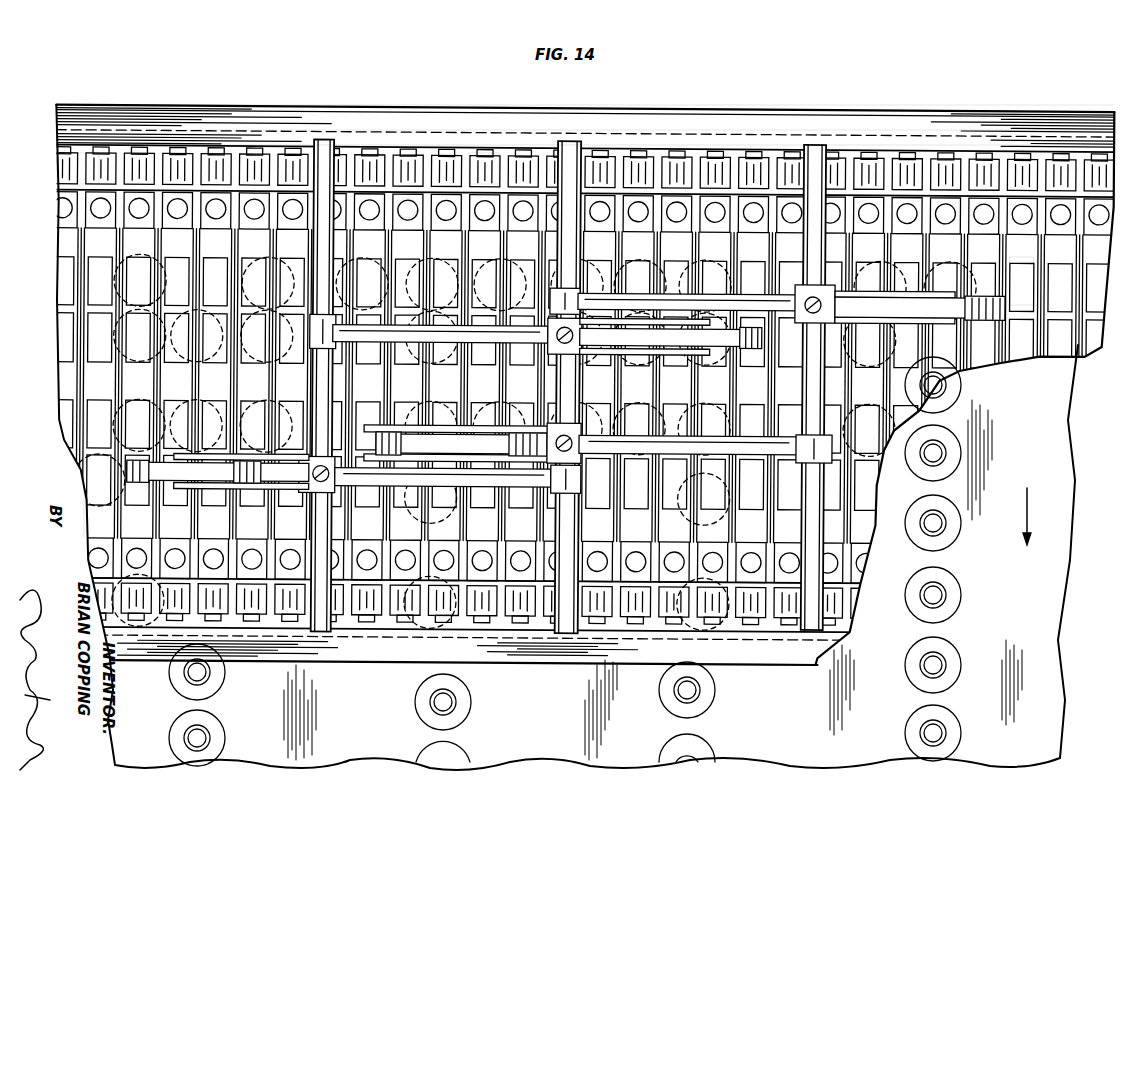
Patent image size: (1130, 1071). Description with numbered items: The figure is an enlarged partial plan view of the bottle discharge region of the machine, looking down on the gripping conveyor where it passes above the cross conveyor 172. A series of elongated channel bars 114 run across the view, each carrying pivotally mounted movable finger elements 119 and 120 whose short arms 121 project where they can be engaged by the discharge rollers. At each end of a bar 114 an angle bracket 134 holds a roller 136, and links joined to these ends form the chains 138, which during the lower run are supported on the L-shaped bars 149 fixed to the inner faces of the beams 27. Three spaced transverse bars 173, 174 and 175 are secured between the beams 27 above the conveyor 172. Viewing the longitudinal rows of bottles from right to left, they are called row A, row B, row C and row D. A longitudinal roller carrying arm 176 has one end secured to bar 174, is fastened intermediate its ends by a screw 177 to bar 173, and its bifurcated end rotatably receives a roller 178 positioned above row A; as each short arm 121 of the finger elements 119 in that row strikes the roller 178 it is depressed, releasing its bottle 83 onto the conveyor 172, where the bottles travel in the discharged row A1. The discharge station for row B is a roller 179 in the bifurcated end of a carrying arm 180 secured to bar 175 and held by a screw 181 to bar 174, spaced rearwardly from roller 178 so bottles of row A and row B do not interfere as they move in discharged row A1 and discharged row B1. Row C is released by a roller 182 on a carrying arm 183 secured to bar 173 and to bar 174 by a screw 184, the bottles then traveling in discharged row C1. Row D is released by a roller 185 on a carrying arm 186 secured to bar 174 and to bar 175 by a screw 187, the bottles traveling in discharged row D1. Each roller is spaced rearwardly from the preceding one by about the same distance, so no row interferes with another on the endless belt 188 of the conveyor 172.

The beams 27 is at (440, 98).
The bottles 83 is at (172, 740).
The channel bar 114 is at (95, 238).
The finger element 119 is at (140, 265).
The finger element 120 is at (148, 352).
The short arm 121 is at (490, 270).
The angle bracket 134 is at (438, 215).
The roller 136 is at (495, 168).
The chains 138 is at (285, 145).
The L-shaped bars 149 is at (76, 149).
The conveyor 172 is at (1065, 533).
The transverse bar 173 is at (335, 145).
The transverse bar 174 is at (565, 145).
The transverse bar 175 is at (828, 145).
The roller carrying arm 176 is at (525, 484).
The screw 177 is at (310, 490).
The roller 178 is at (165, 485).
The roller 179 is at (400, 430).
The carrying arm 180 is at (745, 432).
The screw 181 is at (575, 432).
The roller 182 is at (735, 345).
The carrying arm 183 is at (468, 342).
The screw 184 is at (582, 352).
The roller 185 is at (990, 282).
The carrying arm 186 is at (740, 290).
The screw 187 is at (808, 290).
The endless belt 188 is at (1065, 596).
The row A is at (64, 480).
The row B is at (48, 410).
The row C is at (55, 335).
The row D is at (55, 272).
The row A' A1 is at (175, 698).
The row B' B1 is at (418, 718).
The row C' C1 is at (668, 712).
The row D' D1 is at (912, 630).